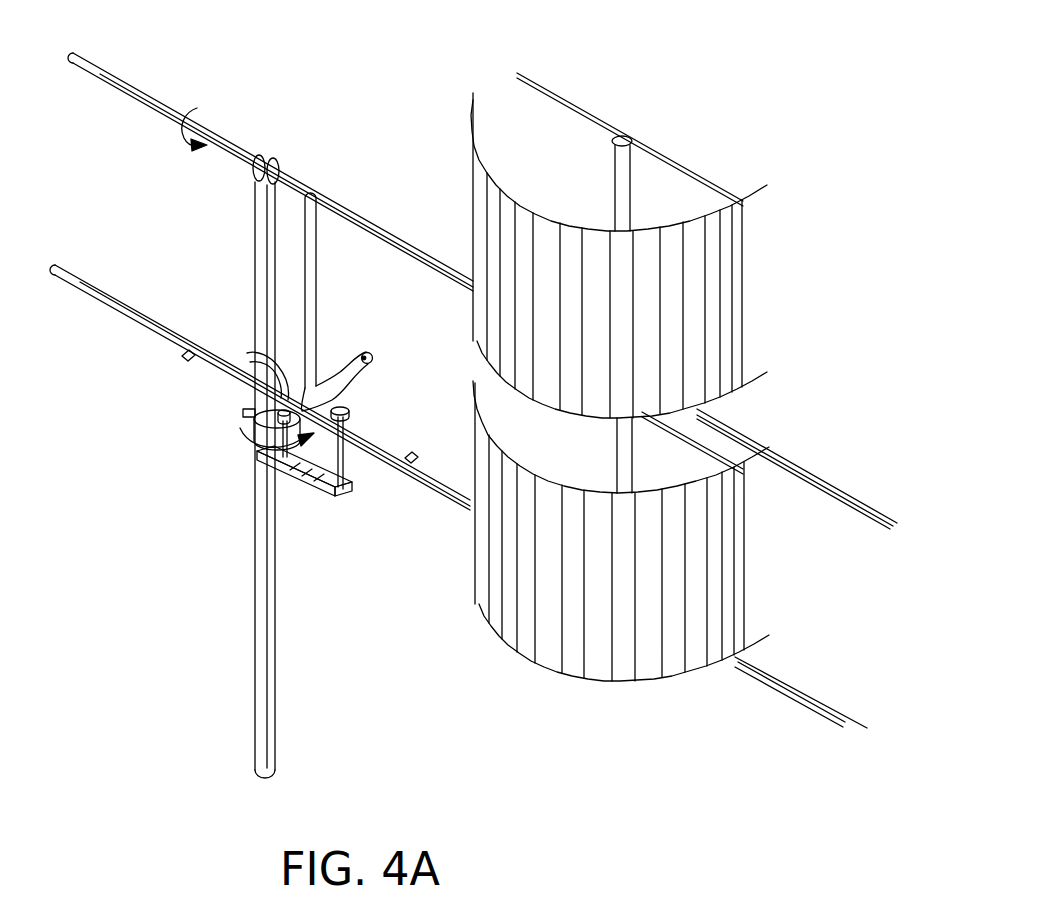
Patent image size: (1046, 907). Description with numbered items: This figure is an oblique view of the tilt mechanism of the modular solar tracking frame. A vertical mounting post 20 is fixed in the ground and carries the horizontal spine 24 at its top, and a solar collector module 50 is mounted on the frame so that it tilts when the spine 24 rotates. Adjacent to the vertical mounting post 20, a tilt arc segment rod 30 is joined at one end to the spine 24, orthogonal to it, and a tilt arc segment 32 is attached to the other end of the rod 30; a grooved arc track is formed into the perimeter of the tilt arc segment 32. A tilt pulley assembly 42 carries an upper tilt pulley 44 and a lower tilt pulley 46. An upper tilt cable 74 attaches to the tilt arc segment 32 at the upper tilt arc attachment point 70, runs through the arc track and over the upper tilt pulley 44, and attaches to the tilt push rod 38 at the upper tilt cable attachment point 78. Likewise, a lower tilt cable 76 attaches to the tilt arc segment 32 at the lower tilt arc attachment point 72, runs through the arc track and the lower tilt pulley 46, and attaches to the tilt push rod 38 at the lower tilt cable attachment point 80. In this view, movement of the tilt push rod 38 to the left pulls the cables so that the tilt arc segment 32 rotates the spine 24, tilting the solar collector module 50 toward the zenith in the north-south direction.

The vertical mounting post 20 is at (261, 223).
The horizontal spine 24 is at (98, 73).
The tilt arc segment rod 30 is at (318, 256).
The tilt arc segment 32 is at (346, 358).
The tilt push rod 38 is at (820, 708).
The tilt pulley assembly 42 is at (307, 487).
The upper tilt pulley 44 is at (352, 408).
The lower tilt pulley 46 is at (263, 367).
The solar collector module 50 is at (784, 100).
The upper tilt arc attachment point 70 is at (369, 352).
The lower tilt arc attachment point 72 is at (258, 438).
The upper tilt cable 74 is at (362, 427).
The lower tilt cable 76 is at (222, 373).
The upper tilt cable attachment point 78 is at (418, 457).
The lower tilt cable attachment point 80 is at (180, 357).